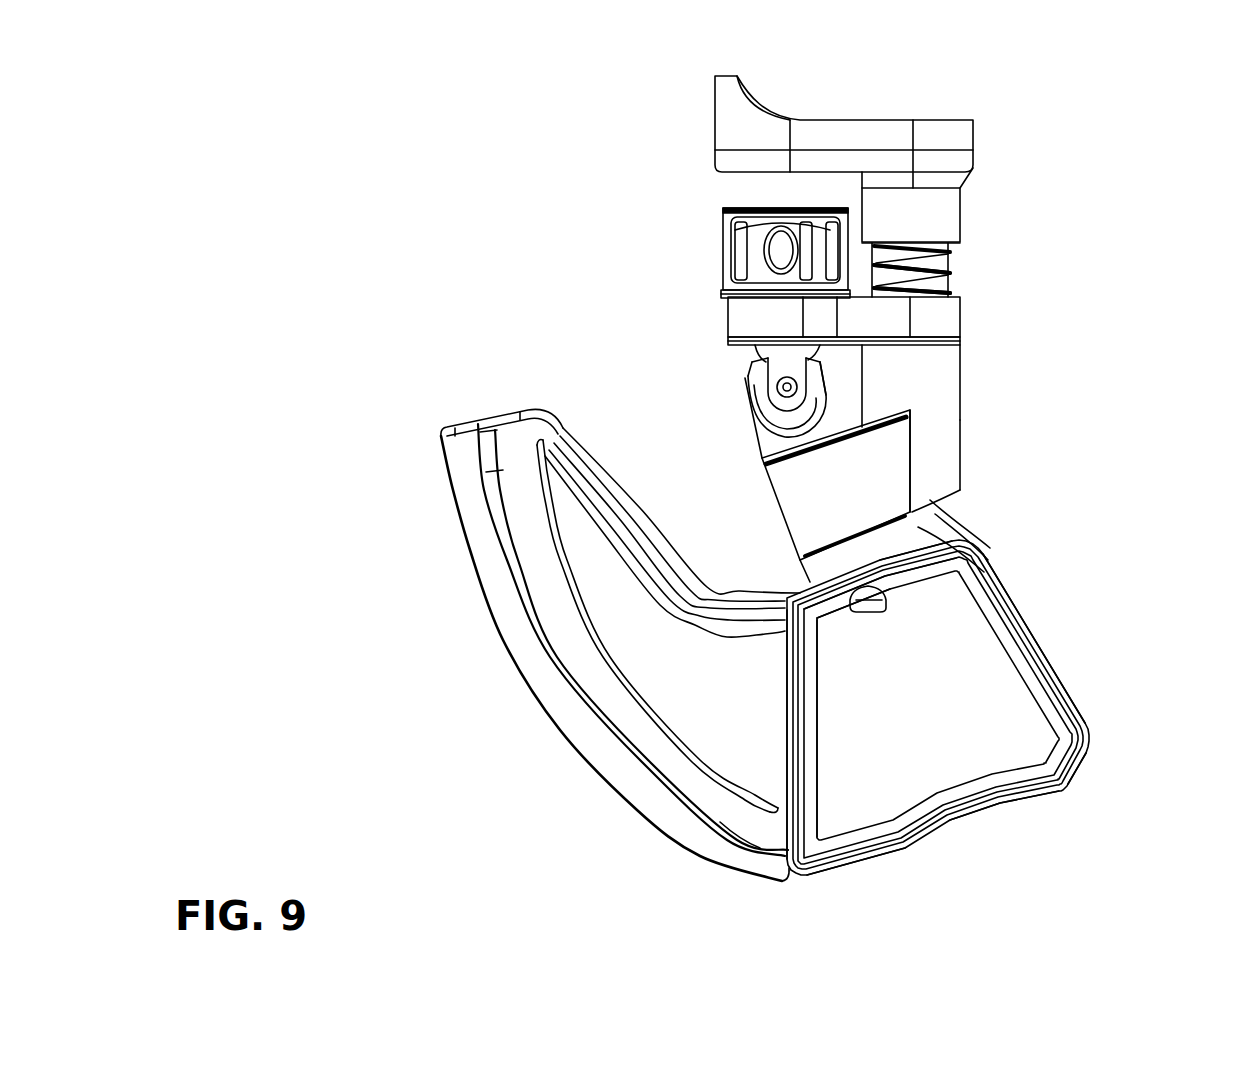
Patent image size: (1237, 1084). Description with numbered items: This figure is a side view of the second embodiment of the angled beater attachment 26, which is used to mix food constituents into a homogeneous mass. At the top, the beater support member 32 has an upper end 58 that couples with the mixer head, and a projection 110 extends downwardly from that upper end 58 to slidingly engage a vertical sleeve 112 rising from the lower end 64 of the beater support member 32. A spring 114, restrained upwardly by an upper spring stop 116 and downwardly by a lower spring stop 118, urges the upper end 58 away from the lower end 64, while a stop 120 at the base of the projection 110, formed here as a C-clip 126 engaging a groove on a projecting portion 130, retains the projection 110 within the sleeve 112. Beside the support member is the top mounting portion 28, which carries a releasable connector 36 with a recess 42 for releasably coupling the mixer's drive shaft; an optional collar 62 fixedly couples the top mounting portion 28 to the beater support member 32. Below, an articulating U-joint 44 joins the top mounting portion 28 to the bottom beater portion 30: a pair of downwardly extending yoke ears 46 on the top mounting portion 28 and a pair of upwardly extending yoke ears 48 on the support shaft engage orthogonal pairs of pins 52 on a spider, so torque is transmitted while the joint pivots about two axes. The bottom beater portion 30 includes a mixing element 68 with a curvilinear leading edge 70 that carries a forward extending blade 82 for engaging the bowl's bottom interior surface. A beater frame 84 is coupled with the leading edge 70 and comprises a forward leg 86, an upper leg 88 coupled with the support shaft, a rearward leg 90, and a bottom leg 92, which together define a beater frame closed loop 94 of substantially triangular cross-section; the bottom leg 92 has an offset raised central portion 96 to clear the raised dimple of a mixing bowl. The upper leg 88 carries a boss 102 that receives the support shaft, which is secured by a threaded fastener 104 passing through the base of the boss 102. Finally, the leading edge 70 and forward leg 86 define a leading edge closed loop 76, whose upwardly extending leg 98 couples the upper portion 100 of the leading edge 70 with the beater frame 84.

The angled beater attachment 26 is at (1160, 130).
The upper end 58 is at (955, 144).
The beater support member 32 is at (958, 180).
The upper spring stop 116 is at (958, 242).
The projection 110 is at (945, 261).
The spring 114 is at (945, 276).
The lower spring stop 118 is at (960, 290).
The releasable connector 36 is at (733, 240).
The recess 42 is at (778, 233).
The top mounting portion 28 is at (727, 283).
The collar 62 is at (946, 320).
The vertical sleeve 112 is at (946, 376).
The lower end 64 is at (958, 443).
The downwardly extending yoke ears 46 is at (767, 350).
The articulating U-joint 44 is at (743, 370).
The orthogonal pins 52 is at (767, 404).
The upwardly extending yoke ears 48 is at (767, 425).
The stop 120 is at (951, 495).
The C-clip 126 is at (942, 502).
The projecting portion 130 is at (942, 521).
The boss 102 is at (810, 573).
The beater frame 84 is at (1076, 764).
The rearward leg 90 is at (1013, 577).
The beater frame closed loop 94 is at (1044, 636).
The bottom leg 92 is at (1017, 797).
The mixing element 68 is at (893, 822).
The offset raised central portion 96 is at (857, 852).
The forward leg 86 is at (803, 753).
The upper leg 88 is at (927, 570).
The bottom beater portion 30 is at (795, 608).
The threaded fastener 104 is at (870, 603).
The curvilinear leading edge 70 is at (583, 658).
The forward extending blade 82 is at (508, 612).
The upper portion 100 is at (497, 420).
The upwardly extending leg 98 is at (662, 566).
The leading edge closed loop 76 is at (728, 827).